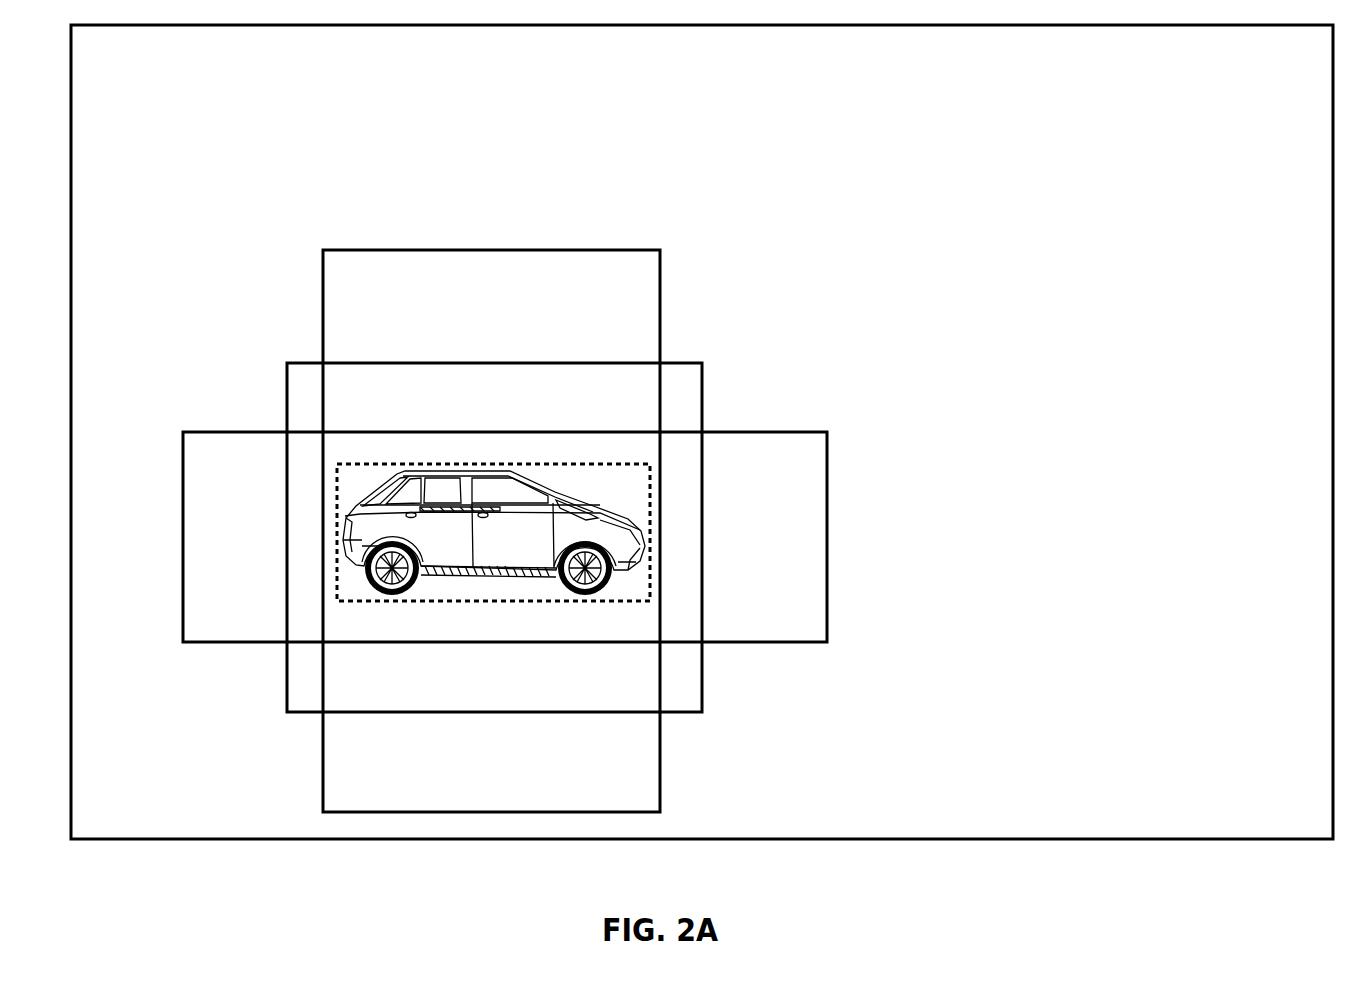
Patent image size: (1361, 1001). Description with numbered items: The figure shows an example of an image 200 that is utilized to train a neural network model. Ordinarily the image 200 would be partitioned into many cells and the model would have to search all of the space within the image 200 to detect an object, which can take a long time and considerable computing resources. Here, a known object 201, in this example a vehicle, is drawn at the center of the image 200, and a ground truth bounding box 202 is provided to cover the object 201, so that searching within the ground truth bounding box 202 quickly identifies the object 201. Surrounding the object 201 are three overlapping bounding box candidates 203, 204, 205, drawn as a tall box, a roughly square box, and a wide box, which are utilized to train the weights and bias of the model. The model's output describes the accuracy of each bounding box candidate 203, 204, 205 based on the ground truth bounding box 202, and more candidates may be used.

The image 200 is at (1260, 105).
The object 201 is at (533, 551).
The ground truth bounding box 202 is at (603, 606).
The bounding box candidate 203 is at (463, 248).
The bounding box candidate 204 is at (702, 385).
The bounding box candidate 205 is at (827, 494).